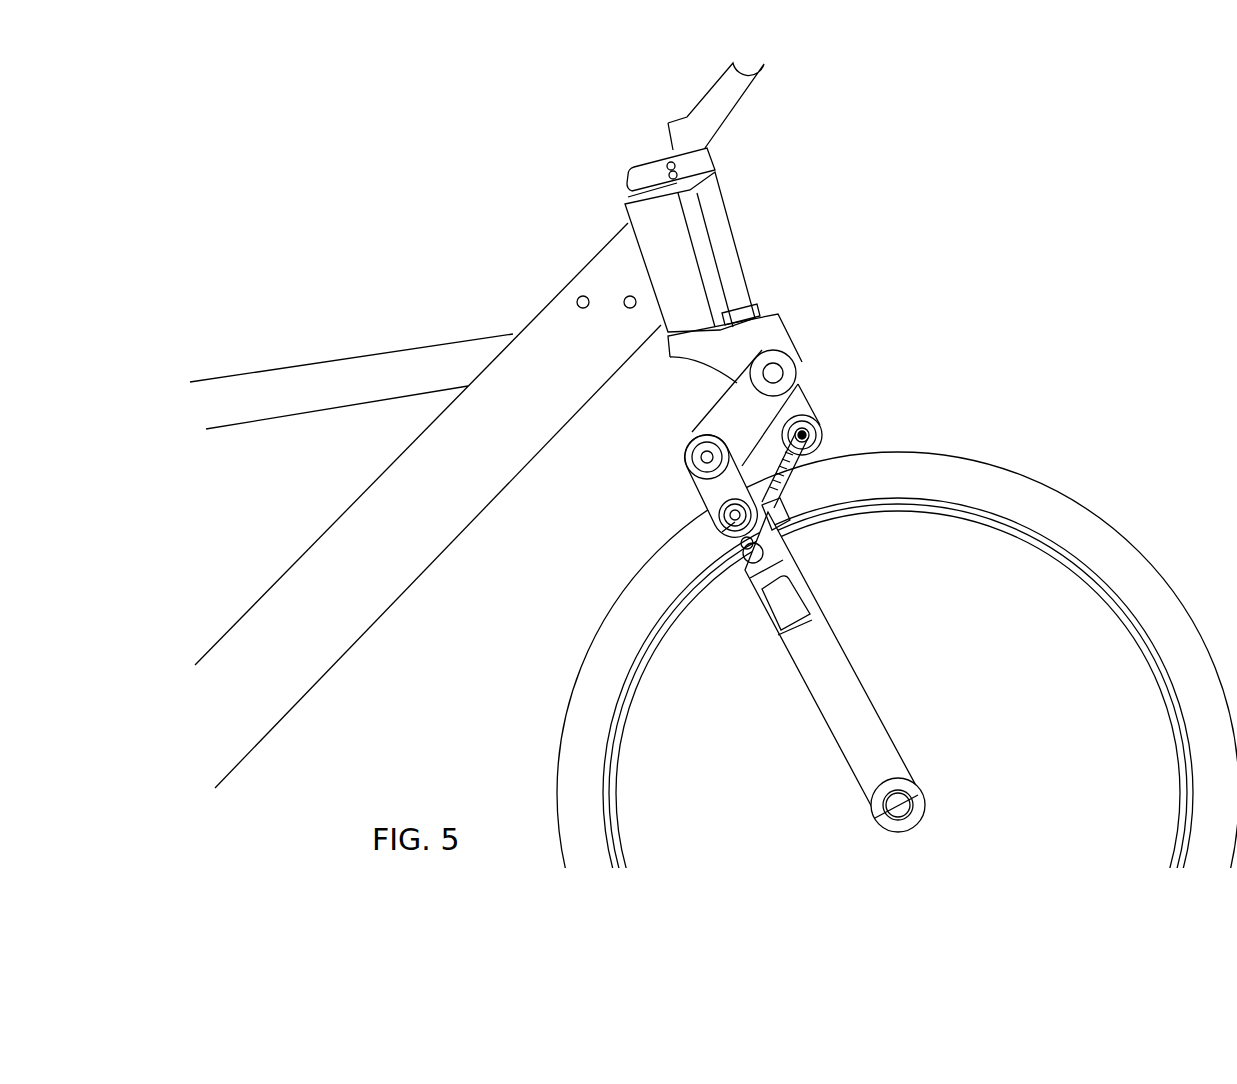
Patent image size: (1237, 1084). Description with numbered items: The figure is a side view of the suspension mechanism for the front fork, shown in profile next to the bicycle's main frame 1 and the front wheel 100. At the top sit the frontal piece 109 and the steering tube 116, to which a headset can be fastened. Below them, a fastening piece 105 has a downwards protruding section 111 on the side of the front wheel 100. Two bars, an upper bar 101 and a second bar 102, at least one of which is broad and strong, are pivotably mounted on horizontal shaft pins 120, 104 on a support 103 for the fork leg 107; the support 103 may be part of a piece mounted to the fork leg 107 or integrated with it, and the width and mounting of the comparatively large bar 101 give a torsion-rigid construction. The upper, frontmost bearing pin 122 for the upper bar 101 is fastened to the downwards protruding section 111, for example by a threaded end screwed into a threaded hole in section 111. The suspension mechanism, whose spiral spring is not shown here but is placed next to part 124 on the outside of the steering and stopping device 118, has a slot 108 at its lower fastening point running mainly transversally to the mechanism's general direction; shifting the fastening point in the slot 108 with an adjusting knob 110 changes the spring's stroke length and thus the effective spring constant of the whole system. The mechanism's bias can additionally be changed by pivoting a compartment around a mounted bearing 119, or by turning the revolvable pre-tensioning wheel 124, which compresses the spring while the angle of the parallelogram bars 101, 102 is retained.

The main frame 1 is at (490, 294).
The front wheel 100 is at (1203, 780).
The upper bar 101 is at (722, 415).
The bar 102 is at (795, 482).
The support 103 is at (698, 494).
The horizontal shaft pin 104 is at (741, 562).
The fastening piece 105 is at (783, 330).
The fork leg 107 is at (860, 719).
The slot 108 is at (735, 545).
The frontal piece 109 is at (727, 265).
The adjusting knob 110 is at (720, 514).
The downwards protruding section 111 is at (798, 400).
The steering tube 116 is at (668, 250).
The steering and stopping device 118 is at (798, 466).
The bearing 119 is at (815, 428).
The horizontal shaft pin 120 is at (700, 456).
The upper frontmost bearing pin 122 is at (776, 372).
The pre-tensioning wheel 124 is at (776, 522).